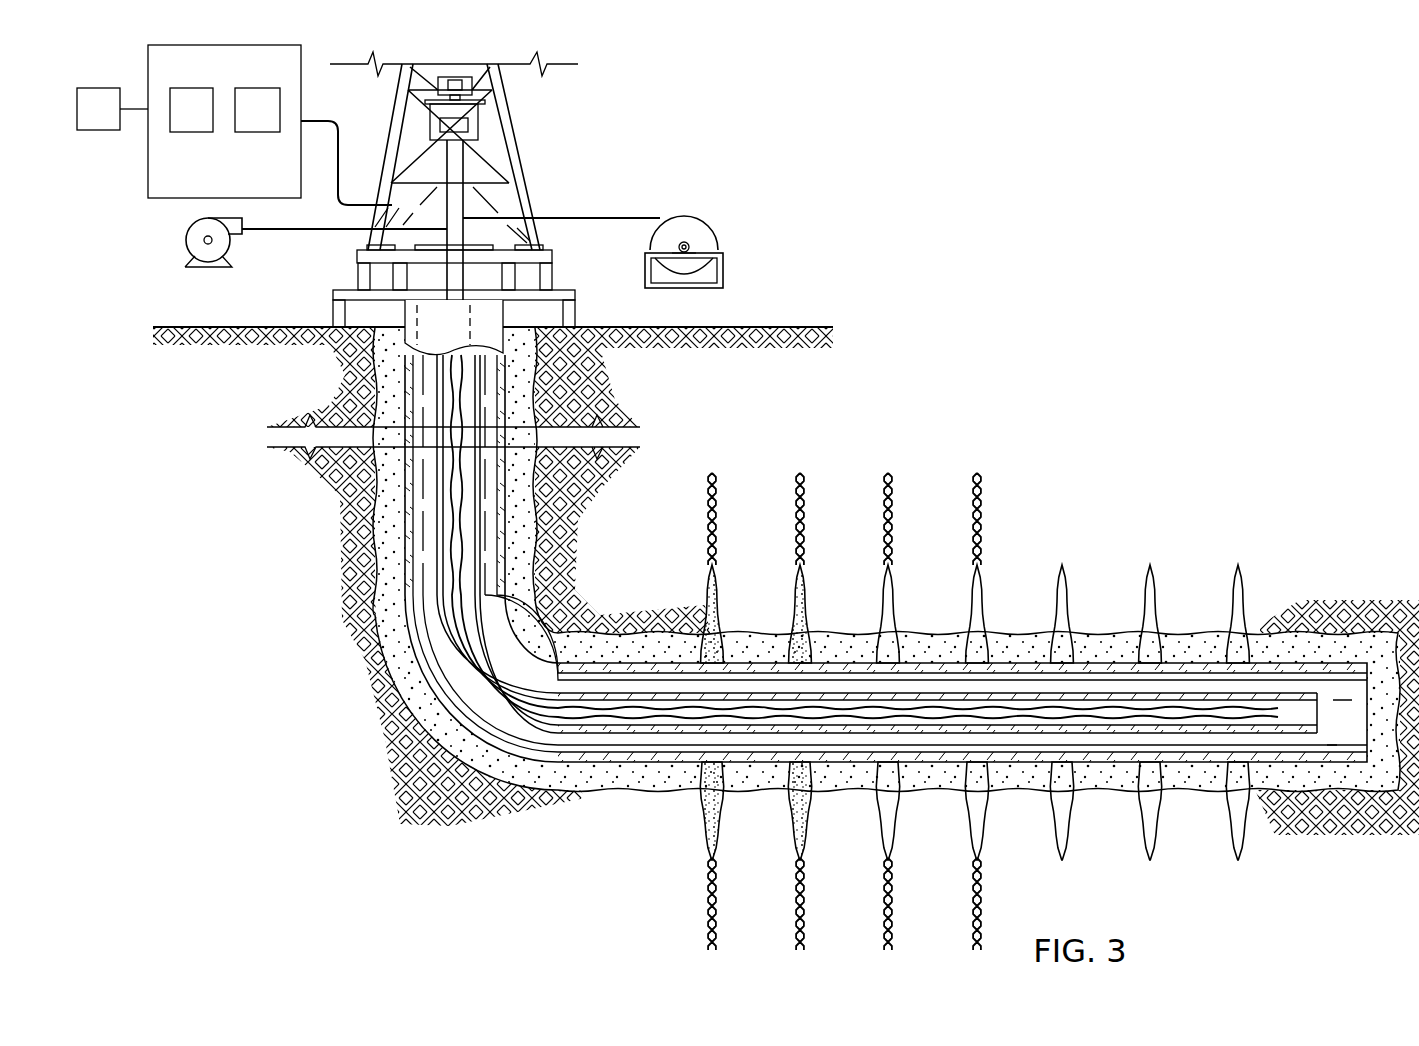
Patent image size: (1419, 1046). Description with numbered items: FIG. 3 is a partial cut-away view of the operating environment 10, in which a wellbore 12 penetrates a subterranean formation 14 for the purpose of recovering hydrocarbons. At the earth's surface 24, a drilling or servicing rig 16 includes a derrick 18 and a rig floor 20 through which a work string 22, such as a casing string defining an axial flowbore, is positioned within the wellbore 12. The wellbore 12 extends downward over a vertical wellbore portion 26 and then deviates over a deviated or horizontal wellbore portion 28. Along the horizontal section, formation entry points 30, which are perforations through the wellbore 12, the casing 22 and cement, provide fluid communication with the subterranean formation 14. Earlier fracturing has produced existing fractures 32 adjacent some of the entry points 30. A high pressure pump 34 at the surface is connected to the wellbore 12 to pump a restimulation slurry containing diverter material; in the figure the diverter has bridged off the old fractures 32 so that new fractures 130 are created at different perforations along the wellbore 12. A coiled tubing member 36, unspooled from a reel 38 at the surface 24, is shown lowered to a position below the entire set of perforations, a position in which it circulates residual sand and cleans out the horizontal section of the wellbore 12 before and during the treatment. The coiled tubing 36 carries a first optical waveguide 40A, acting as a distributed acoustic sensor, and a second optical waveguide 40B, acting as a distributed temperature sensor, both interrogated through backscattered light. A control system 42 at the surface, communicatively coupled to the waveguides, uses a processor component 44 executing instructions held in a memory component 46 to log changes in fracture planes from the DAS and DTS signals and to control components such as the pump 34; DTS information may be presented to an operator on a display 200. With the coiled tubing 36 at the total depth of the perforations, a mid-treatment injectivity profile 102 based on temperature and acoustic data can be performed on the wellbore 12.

The operating environment 10 is at (1158, 108).
The wellbore 12 is at (845, 591).
The subterranean formation 14 is at (1001, 700).
The drilling or servicing rig 16 is at (477, 203).
The derrick 18 is at (522, 122).
The rig floor 20 is at (566, 290).
The work string 22 is at (626, 668).
The earth's surface 24 is at (796, 326).
The vertical wellbore portion 26 is at (598, 516).
The deviated or horizontal wellbore portion 28 is at (1332, 845).
The formation entry points 30 is at (1001, 713).
The fractures 32 is at (844, 712).
The high pressure pump 34 is at (186, 238).
The coiled tubing member 36 is at (612, 217).
The reel 38 is at (694, 216).
The first optical waveguide 40A is at (450, 553).
The second optical waveguide 40B is at (457, 597).
The control system 42 is at (233, 125).
The processor component 44 is at (188, 134).
The memory component 46 is at (266, 134).
The mid-treatment injectivity profile 102 is at (722, 380).
The new fractures 130 is at (971, 517).
The display 200 is at (99, 132).